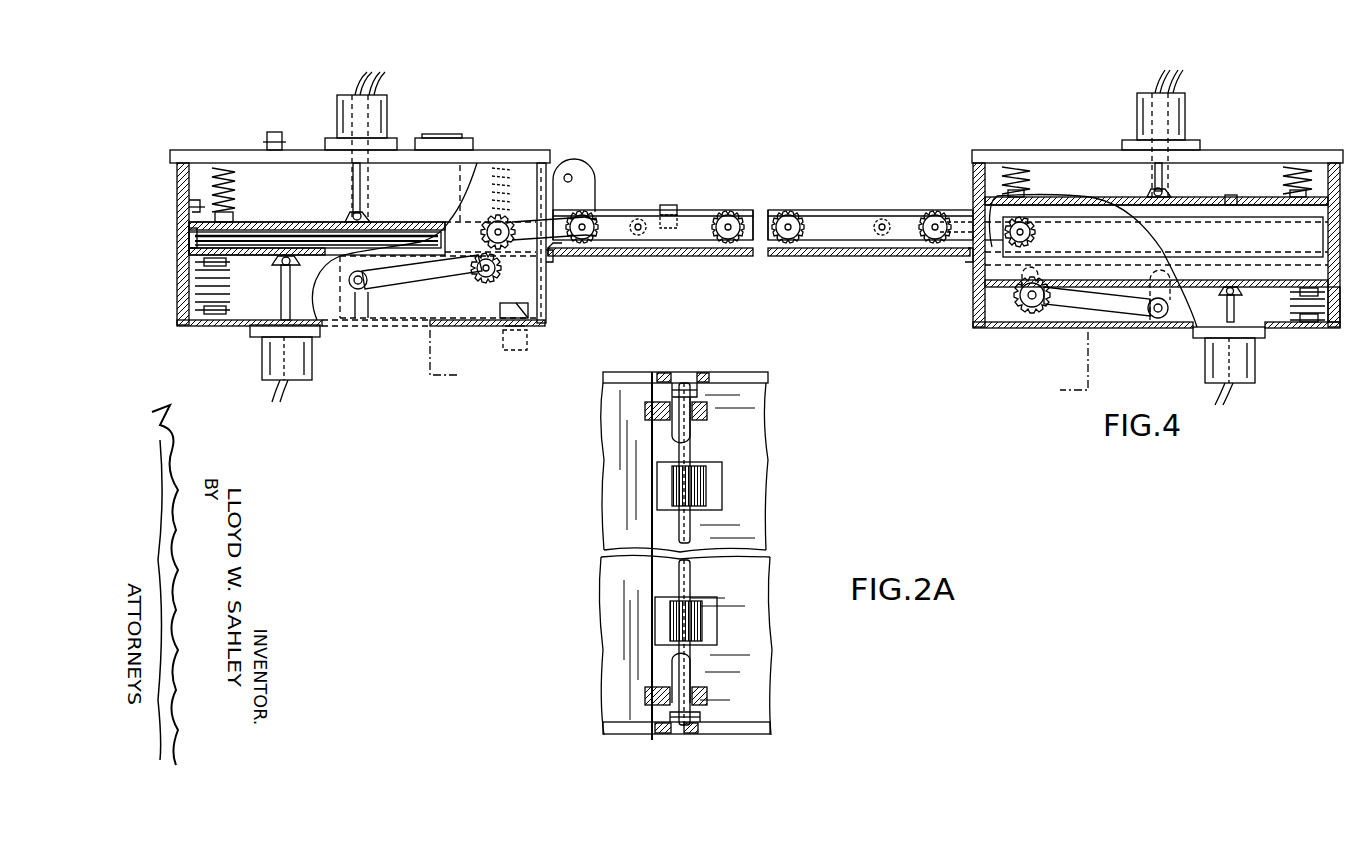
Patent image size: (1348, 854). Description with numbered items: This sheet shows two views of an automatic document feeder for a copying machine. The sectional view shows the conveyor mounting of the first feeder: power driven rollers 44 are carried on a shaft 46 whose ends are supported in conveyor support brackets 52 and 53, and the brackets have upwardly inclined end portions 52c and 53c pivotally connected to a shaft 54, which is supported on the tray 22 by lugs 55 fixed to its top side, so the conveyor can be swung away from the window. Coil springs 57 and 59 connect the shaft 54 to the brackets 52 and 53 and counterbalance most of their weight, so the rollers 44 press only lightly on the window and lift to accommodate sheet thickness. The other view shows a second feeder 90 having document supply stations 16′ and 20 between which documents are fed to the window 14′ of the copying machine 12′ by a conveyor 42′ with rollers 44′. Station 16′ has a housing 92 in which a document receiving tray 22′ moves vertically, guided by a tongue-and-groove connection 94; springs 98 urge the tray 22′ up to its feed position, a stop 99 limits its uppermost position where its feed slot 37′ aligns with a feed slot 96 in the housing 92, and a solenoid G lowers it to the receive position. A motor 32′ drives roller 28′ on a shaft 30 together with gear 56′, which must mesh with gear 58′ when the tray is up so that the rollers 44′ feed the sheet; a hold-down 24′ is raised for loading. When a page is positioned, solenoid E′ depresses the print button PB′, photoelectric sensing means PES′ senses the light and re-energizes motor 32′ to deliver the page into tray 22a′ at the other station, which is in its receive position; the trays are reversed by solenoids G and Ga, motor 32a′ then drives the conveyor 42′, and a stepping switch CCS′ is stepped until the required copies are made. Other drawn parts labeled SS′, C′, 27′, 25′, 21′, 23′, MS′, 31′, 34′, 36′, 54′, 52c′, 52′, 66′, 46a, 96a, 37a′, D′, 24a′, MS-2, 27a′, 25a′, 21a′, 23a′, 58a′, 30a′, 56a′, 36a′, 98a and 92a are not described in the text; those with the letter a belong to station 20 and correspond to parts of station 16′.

In FIG. 4, the document supply station 16′ is at (262, 132).
In FIG. 4, the selector switch SS′ is at (278, 132).
In FIG. 4, the clock motor C′ is at (383, 112).
In FIG. 4, the stepping switch CCS′ is at (455, 137).
In FIG. 4, the stop 99 is at (197, 205).
In FIG. 4, the document receiving tray 22′ is at (200, 236).
In FIG. 4, the tongue-and-groove connection 94 is at (186, 256).
In FIG. 4, the springs 98 is at (222, 296).
In FIG. 4, the spring 27′ is at (230, 184).
In FIG. 4, the shelf 25′ is at (268, 225).
In FIG. 4, the hold-down 24′ is at (278, 222).
In FIG. 4, the post 21′ is at (352, 185).
In FIG. 4, the cam follower 23′ is at (385, 225).
In FIG. 4, the motor switch MS′ is at (501, 217).
In FIG. 4, the gear 58′ is at (488, 220).
In FIG. 4, the shaft 31′ is at (487, 236).
In FIG. 4, the feed slot 37′ is at (503, 268).
In FIG. 4, the shaft 30 is at (516, 299).
In FIG. 4, the housing 92 is at (546, 296).
In FIG. 4, the solenoid E′ is at (530, 318).
In FIG. 4, the print button PB′ is at (520, 352).
In FIG. 4, the copying machine 12′ is at (424, 350).
In FIG. 4, the lever 34′ is at (372, 292).
In FIG. 4, the motor 32′ is at (318, 304).
In FIG. 4, the roller 36′ is at (376, 290).
In FIG. 4, the roller 28′ is at (422, 282).
In FIG. 4, the gear 56′ is at (483, 283).
In FIG. 4, the solenoid G is at (300, 367).
In FIG. 4, the automatic document feeder 90 is at (762, 151).
In FIG. 4, the mount 54′ is at (570, 176).
In FIG. 4, the rail 52c′ is at (583, 188).
In FIG. 4, the rail 52′ is at (822, 210).
In FIG. 4, the window 14′ is at (708, 256).
In FIG. 4, the rollers 44′ is at (585, 211).
In FIG. 4, the idler 66′ is at (640, 243).
In FIG. 4, the photoelectric sensing means PES′ is at (672, 198).
In FIG. 4, the conveyor 42′ is at (761, 205).
In FIG. 4, the feed slot 96 is at (560, 250).
In FIG. 4, the shaft 46a is at (597, 243).
In FIG. 4, the bracket 96a is at (972, 258).
In FIG. 4, the gear 37a′ is at (978, 272).
In FIG. 4, the document supply station 20 is at (1251, 115).
In FIG. 4, the drive motor D′ is at (1182, 106).
In FIG. 4, the program carrier 24a′ is at (1226, 190).
In FIG. 4, the motor switch MS-2 is at (1232, 195).
In FIG. 4, the spring 27a′ is at (1031, 182).
In FIG. 4, the shelf 25a′ is at (1125, 188).
In FIG. 4, the post 21a′ is at (1166, 184).
In FIG. 4, the tray 22a′ is at (1327, 263).
In FIG. 4, the cam follower 23a′ is at (1225, 222).
In FIG. 4, the gear 58a′ is at (1038, 236).
In FIG. 4, the gear 30a′ is at (1025, 300).
In FIG. 4, the pinion 56a′ is at (1030, 312).
In FIG. 4, the link 36a′ is at (1110, 318).
In FIG. 4, the motor 32a′ is at (1172, 327).
In FIG. 4, the spring 98a is at (1290, 306).
In FIG. 4, the bracket 92a is at (1340, 330).
In FIG. 4, the solenoid Ga is at (1250, 380).
In FIG. 2A, the tray 22 is at (615, 525).
In FIG. 2A, the conveyor support bracket 53 is at (752, 372).
In FIG. 2A, the upwardly inclined end portion 53c is at (690, 372).
In FIG. 2A, the coil spring 59 is at (668, 390).
In FIG. 2A, the shaft 46 is at (692, 530).
In FIG. 2A, the lugs 55 is at (650, 408).
In FIG. 2A, the shaft 54 is at (677, 430).
In FIG. 2A, the power driven rollers 44 is at (708, 485).
In FIG. 2A, the coil spring 57 is at (668, 720).
In FIG. 2A, the conveyor support bracket 52 is at (760, 735).
In FIG. 2A, the upwardly inclined end portion 52c is at (692, 735).